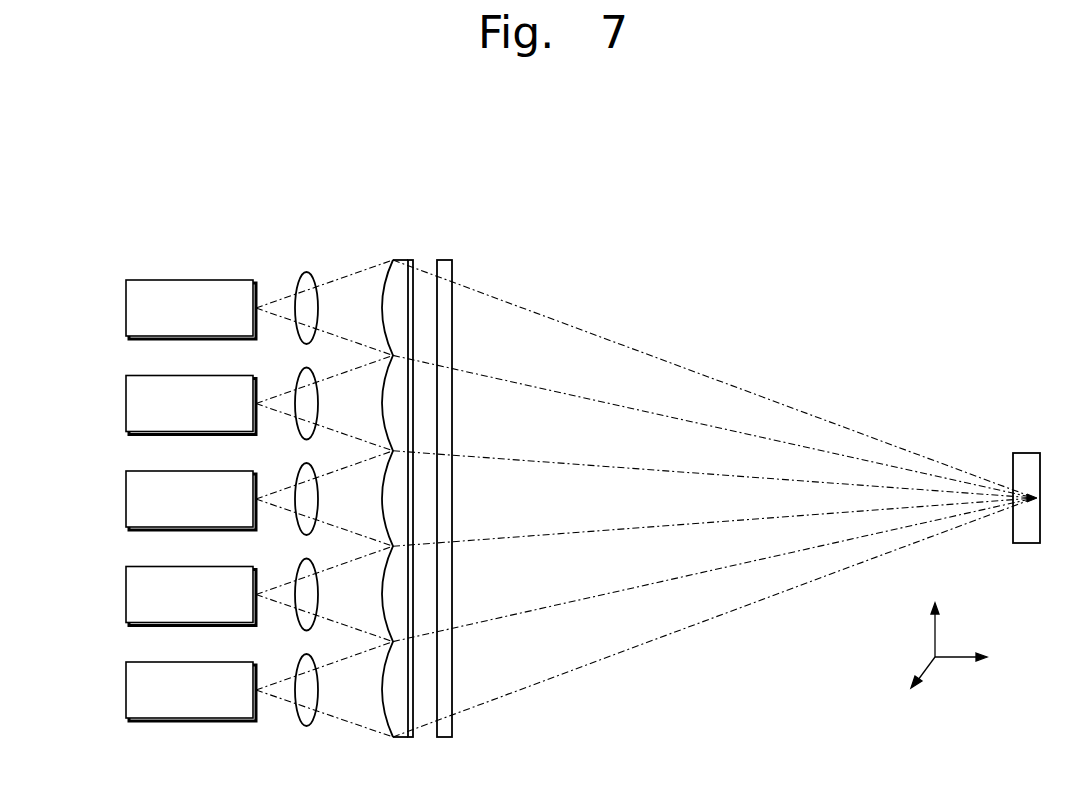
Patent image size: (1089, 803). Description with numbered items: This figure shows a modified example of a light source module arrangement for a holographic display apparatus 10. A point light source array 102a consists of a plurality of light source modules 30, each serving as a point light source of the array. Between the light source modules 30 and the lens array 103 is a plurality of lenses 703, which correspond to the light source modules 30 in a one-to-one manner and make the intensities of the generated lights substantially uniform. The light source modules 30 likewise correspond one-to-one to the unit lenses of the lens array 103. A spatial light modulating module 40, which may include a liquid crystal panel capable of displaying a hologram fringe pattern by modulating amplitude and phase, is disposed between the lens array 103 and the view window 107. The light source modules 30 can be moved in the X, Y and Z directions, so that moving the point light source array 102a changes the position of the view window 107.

The optical system 10 is at (833, 197).
The point light source array 102a is at (153, 242).
The light source module 30 is at (126, 307).
The lens 703 is at (307, 270).
The lens array 103 is at (403, 258).
The spatial light modulating module 40 is at (448, 258).
The view window 107 is at (1026, 452).